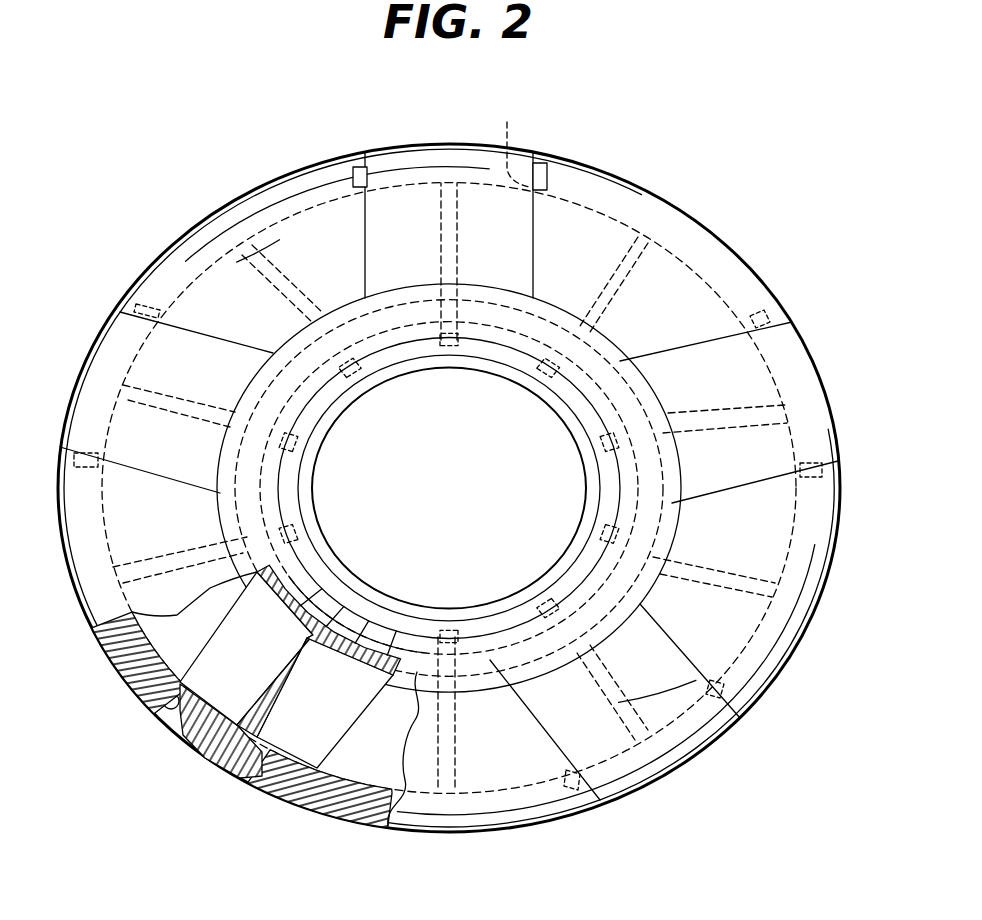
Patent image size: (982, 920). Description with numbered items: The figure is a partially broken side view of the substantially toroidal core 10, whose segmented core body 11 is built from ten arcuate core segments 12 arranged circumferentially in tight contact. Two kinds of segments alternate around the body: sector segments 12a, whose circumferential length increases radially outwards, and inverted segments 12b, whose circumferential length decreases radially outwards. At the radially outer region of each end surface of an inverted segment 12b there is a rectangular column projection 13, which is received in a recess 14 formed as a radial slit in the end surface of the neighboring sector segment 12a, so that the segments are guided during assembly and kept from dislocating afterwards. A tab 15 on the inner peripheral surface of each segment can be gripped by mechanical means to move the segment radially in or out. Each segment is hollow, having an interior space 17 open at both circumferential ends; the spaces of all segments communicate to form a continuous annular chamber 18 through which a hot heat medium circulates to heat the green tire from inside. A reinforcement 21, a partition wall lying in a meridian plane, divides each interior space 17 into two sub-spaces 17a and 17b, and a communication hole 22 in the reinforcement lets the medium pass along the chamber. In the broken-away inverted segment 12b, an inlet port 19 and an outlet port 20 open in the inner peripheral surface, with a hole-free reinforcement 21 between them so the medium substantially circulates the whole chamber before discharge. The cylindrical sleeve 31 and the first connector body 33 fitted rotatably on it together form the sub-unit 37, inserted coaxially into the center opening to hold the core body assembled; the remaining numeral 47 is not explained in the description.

The toroidal core 10 is at (242, 166).
The core body 11 is at (674, 196).
The core segments 12 is at (718, 238).
The sector segments 12a is at (760, 279).
The inverted segments 12b is at (808, 357).
The projection 13 is at (548, 164).
The recess 14 is at (140, 742).
The tab 15 is at (339, 585).
The interior space 17 is at (250, 782).
The sub-space 17a is at (222, 665).
The sub-space 17b is at (304, 707).
The annular chamber 18 is at (230, 694).
The inlet port 19 is at (309, 565).
The outlet port 20 is at (399, 609).
The reinforcement 21 is at (279, 721).
The communication hole 22 is at (147, 560).
The cylindrical sleeve 31 is at (488, 352).
The first connector body 33 is at (650, 393).
The sub-unit 37 is at (614, 336).
The disc 47 is at (645, 152).